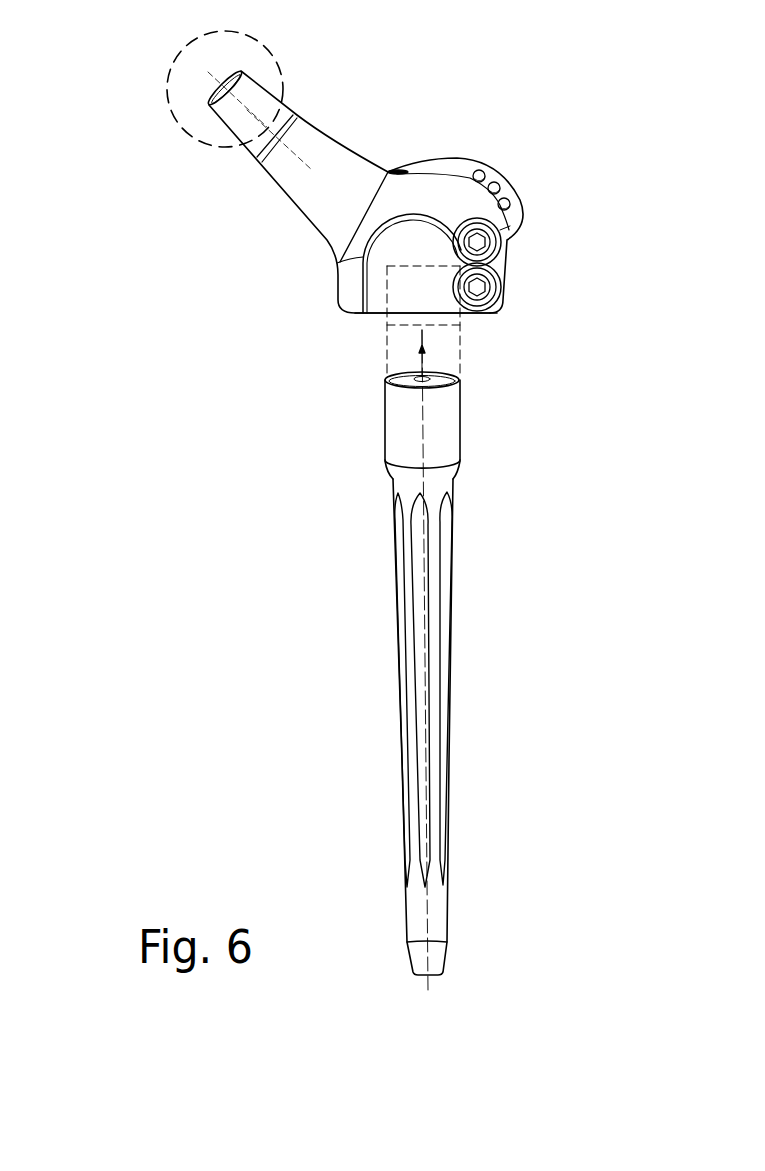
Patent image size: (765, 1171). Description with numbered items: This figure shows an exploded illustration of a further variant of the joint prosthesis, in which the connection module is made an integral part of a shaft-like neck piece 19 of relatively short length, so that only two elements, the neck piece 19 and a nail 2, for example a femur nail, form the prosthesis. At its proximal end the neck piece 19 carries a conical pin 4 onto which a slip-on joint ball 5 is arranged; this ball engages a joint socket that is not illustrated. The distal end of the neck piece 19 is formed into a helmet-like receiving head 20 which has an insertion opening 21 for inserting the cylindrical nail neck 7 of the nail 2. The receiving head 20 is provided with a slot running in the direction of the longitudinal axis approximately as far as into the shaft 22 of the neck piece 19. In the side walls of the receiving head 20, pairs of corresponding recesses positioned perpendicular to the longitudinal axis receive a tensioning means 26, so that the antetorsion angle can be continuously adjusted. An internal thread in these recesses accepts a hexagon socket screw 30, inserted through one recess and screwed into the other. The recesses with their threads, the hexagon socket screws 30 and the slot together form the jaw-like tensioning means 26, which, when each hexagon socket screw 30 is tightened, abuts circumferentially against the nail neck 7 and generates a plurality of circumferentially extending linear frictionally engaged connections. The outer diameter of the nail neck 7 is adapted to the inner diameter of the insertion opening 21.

The nail 2 is at (440, 653).
The conical pin 4 is at (263, 78).
The slip-on joint ball 5 is at (170, 72).
The nail neck 7 is at (465, 415).
The neck piece 19 is at (387, 140).
The receiving head 20 is at (458, 178).
The insertion opening 21 is at (420, 317).
The shaft 22 is at (287, 198).
The tensioning means 26 is at (512, 225).
The hexagon socket screw 30 is at (503, 280).